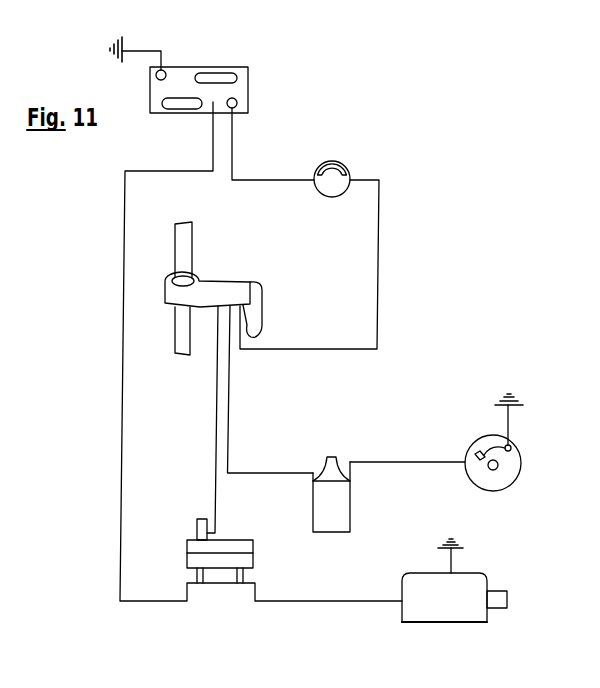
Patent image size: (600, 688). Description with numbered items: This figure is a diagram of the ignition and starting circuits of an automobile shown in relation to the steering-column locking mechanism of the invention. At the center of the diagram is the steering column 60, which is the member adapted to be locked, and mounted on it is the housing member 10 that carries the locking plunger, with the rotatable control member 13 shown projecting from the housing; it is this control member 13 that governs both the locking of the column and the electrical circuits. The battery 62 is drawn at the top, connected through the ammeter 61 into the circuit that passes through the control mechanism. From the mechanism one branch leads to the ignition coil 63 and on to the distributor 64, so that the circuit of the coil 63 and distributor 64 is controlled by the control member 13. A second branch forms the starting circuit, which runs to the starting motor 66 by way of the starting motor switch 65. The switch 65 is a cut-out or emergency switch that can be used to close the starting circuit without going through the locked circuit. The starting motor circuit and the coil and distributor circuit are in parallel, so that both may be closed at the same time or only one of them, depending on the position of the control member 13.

The housing member 10 is at (226, 290).
The control member 13 is at (256, 296).
The steering column 60 is at (183, 252).
The ammeter 61 is at (333, 185).
The battery 62 is at (237, 89).
The ignition coil 63 is at (327, 502).
The distributor 64 is at (515, 465).
The starting motor switch 65 is at (243, 545).
The starting motor 66 is at (473, 583).